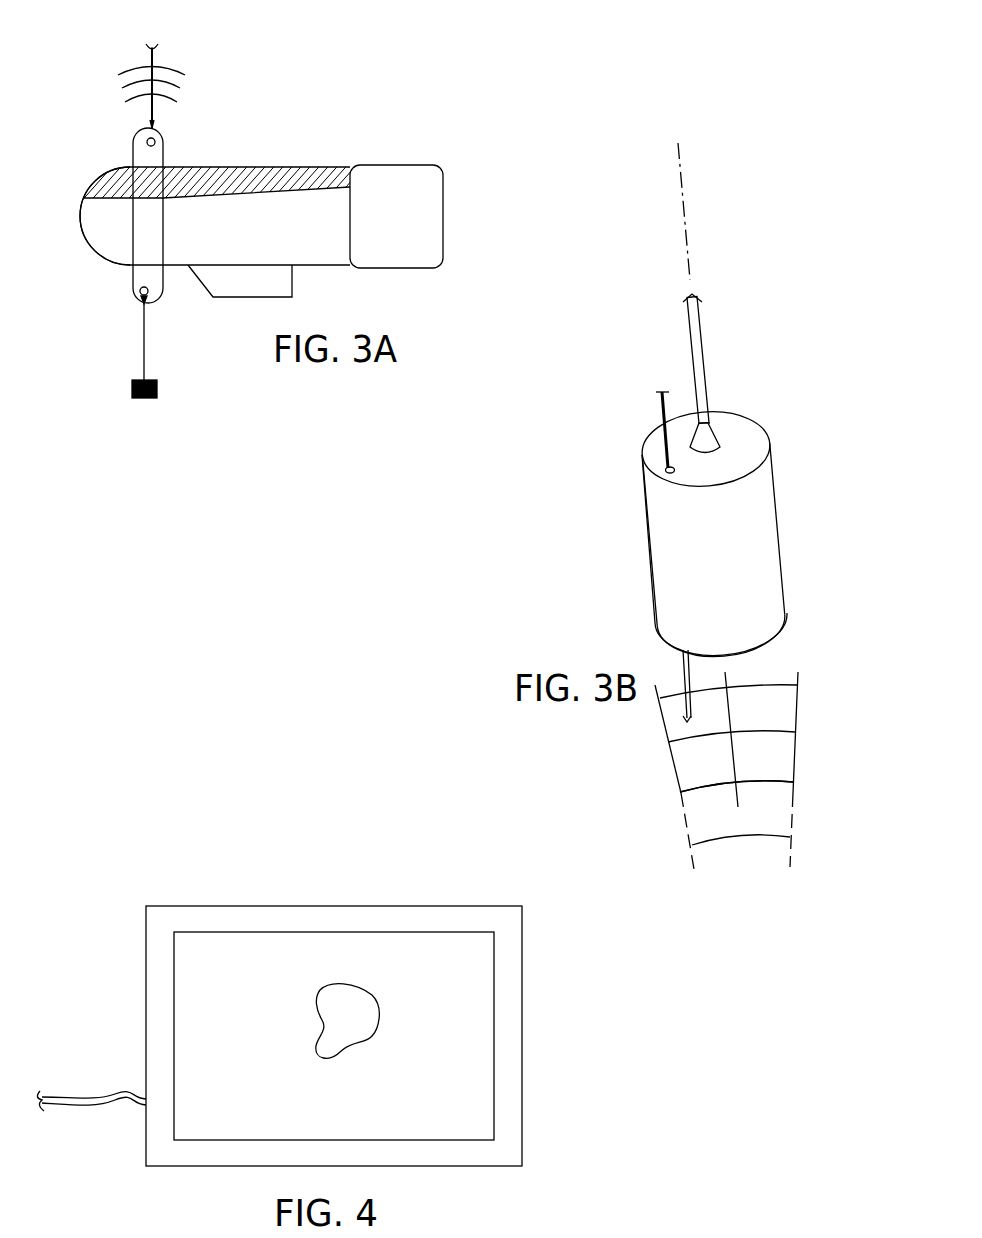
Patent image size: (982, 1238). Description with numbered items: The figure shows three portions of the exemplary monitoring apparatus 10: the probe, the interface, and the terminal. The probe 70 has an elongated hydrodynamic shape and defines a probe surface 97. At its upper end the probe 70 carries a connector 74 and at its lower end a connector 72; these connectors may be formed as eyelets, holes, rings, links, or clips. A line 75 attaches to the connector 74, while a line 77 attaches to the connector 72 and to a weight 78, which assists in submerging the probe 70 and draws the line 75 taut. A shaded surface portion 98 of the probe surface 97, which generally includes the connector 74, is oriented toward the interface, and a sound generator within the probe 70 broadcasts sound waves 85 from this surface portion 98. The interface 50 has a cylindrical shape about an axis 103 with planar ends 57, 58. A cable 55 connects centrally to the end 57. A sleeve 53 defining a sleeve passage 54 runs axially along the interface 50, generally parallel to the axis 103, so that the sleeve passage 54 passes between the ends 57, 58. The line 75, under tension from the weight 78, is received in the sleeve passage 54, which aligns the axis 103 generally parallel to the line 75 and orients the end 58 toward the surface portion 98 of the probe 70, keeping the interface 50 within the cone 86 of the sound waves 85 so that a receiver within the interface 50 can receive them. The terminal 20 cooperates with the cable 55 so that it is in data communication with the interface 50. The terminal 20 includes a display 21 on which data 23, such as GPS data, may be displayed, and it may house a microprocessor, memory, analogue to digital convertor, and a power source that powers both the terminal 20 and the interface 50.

In FIG. 3A, the monitoring apparatus 10 is at (353, 57).
In FIG. 3B, the monitoring apparatus 10 is at (823, 152).
In FIG. 4, the monitoring apparatus 10 is at (176, 872).
In FIG. 4, the terminal 20 is at (522, 981).
In FIG. 4, the display 21 is at (433, 949).
In FIG. 4, the data 23 is at (343, 1005).
In FIG. 3B, the interface 50 is at (777, 515).
In FIG. 3B, the sleeve 53 is at (653, 580).
In FIG. 3B, the sleeve passage 54 is at (652, 468).
In FIG. 3B, the cable 55 is at (698, 340).
In FIG. 4, the cable 55 is at (116, 1088).
In FIG. 3B, the end 57 is at (747, 433).
In FIG. 3B, the end 58 is at (770, 635).
In FIG. 3A, the probe 70 is at (95, 225).
In FIG. 3A, the connector 72 is at (152, 295).
In FIG. 3A, the connector 74 is at (162, 138).
In FIG. 3A, the line 75 is at (145, 62).
In FIG. 3B, the line 75 is at (658, 400).
In FIG. 3A, the line 77 is at (148, 352).
In FIG. 3A, the weight 78 is at (157, 389).
In FIG. 3A, the sound waves 85 is at (170, 70).
In FIG. 3B, the sound waves 85 is at (772, 778).
In FIG. 3B, the cone 86 is at (673, 778).
In FIG. 3A, the probe surface 97 is at (117, 245).
In FIG. 3A, the surface portion 98 is at (267, 176).
In FIG. 3B, the axis 103 is at (687, 232).